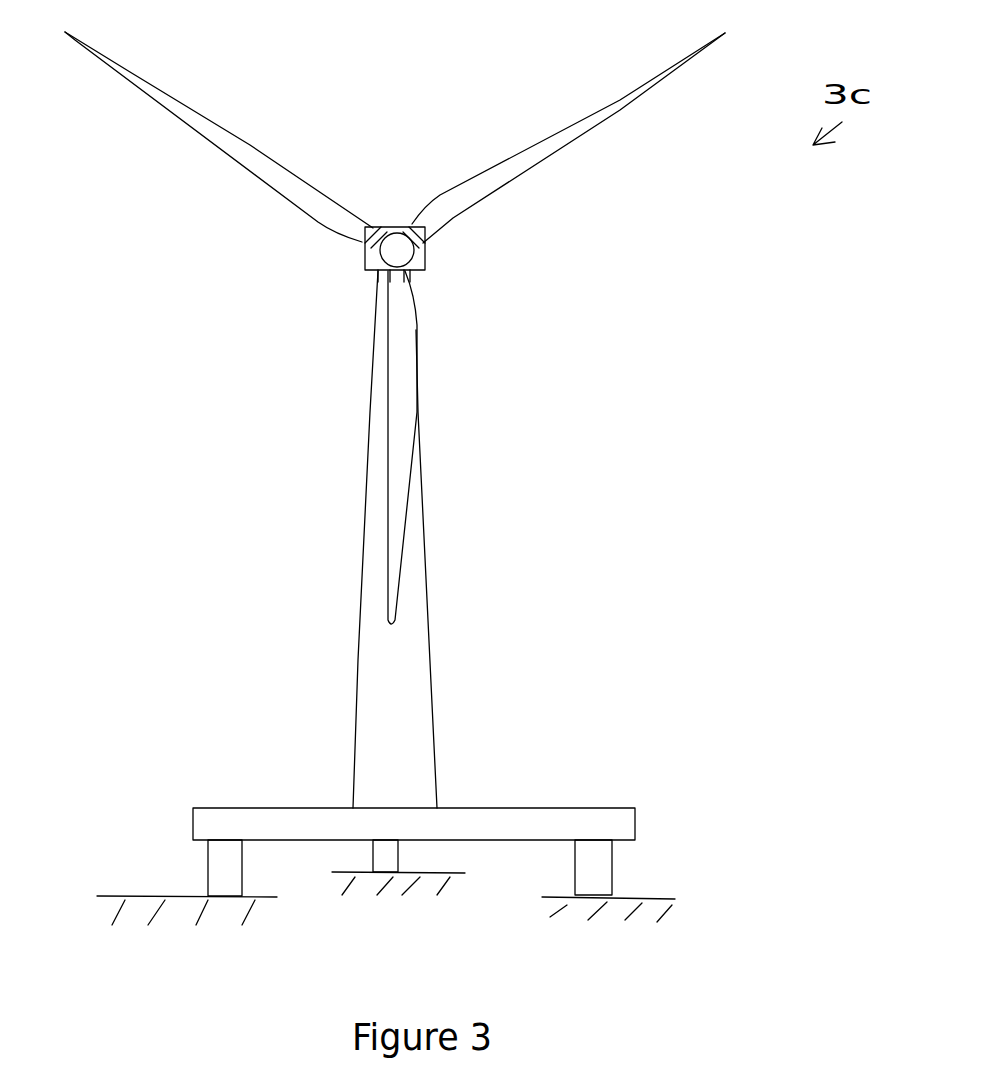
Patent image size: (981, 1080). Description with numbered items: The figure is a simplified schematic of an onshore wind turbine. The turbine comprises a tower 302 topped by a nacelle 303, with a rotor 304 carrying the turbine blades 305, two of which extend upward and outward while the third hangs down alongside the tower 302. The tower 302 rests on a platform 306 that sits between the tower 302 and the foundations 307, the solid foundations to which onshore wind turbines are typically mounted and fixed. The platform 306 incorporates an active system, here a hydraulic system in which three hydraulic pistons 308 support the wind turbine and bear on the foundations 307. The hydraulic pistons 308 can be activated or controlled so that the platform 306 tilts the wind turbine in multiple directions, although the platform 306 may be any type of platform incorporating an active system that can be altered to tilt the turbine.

The tower 302 is at (428, 606).
The nacelle 303 is at (427, 260).
The rotor 304 is at (388, 253).
The turbine blades 305 is at (262, 151).
The platform 306 is at (638, 813).
The foundations 307 is at (157, 933).
The hydraulic pistons 308 is at (243, 866).